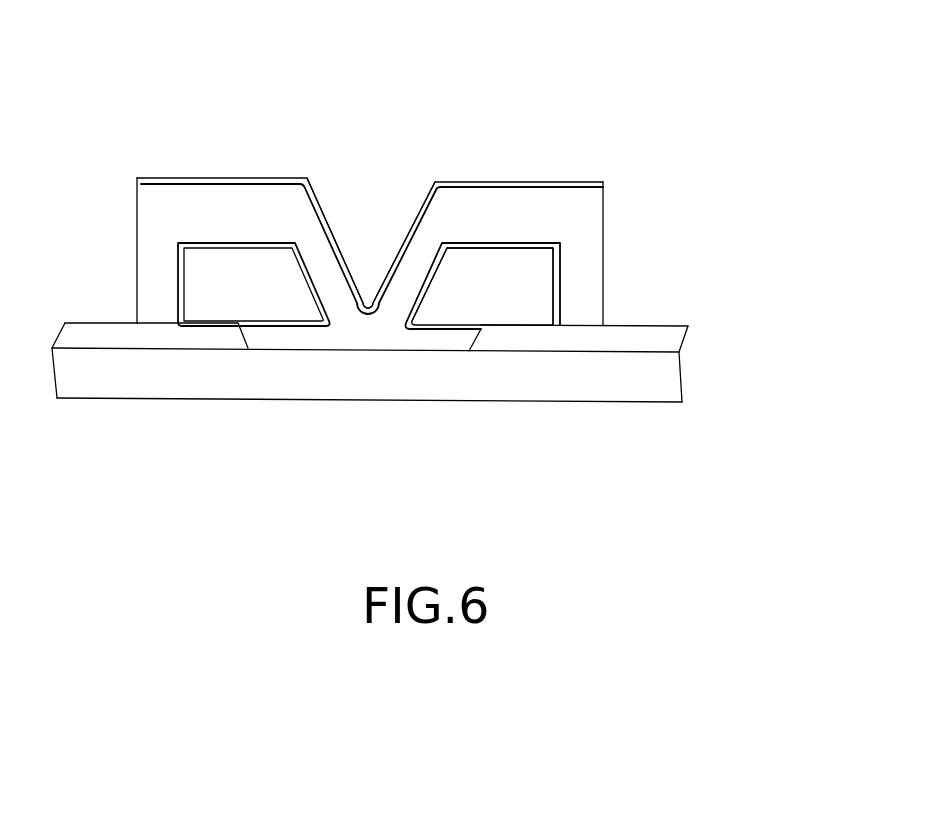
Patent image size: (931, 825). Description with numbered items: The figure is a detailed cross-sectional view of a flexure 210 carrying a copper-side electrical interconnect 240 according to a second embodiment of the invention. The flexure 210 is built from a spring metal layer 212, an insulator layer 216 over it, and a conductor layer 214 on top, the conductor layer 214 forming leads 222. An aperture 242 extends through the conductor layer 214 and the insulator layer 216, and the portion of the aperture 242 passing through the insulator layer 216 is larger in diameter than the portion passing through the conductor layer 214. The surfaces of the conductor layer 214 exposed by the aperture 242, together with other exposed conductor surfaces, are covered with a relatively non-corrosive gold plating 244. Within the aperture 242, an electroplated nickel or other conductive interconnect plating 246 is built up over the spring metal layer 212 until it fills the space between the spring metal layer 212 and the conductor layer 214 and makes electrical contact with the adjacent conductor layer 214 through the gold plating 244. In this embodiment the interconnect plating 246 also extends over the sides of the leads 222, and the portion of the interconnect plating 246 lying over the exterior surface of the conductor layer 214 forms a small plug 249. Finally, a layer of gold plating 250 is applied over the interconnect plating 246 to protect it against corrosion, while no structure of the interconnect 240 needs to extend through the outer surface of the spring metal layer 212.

The flexure 210 is at (152, 417).
The spring metal layer 212 is at (643, 380).
The conductor layer 214 is at (538, 285).
The insulator layer 216 is at (645, 337).
The leads 222 is at (485, 267).
The interconnect 240 is at (603, 114).
The aperture 242 is at (375, 222).
The gold plating 244 is at (187, 245).
The interconnect plating 246 is at (252, 210).
The plug 249 is at (603, 220).
The gold plating 250 is at (195, 183).